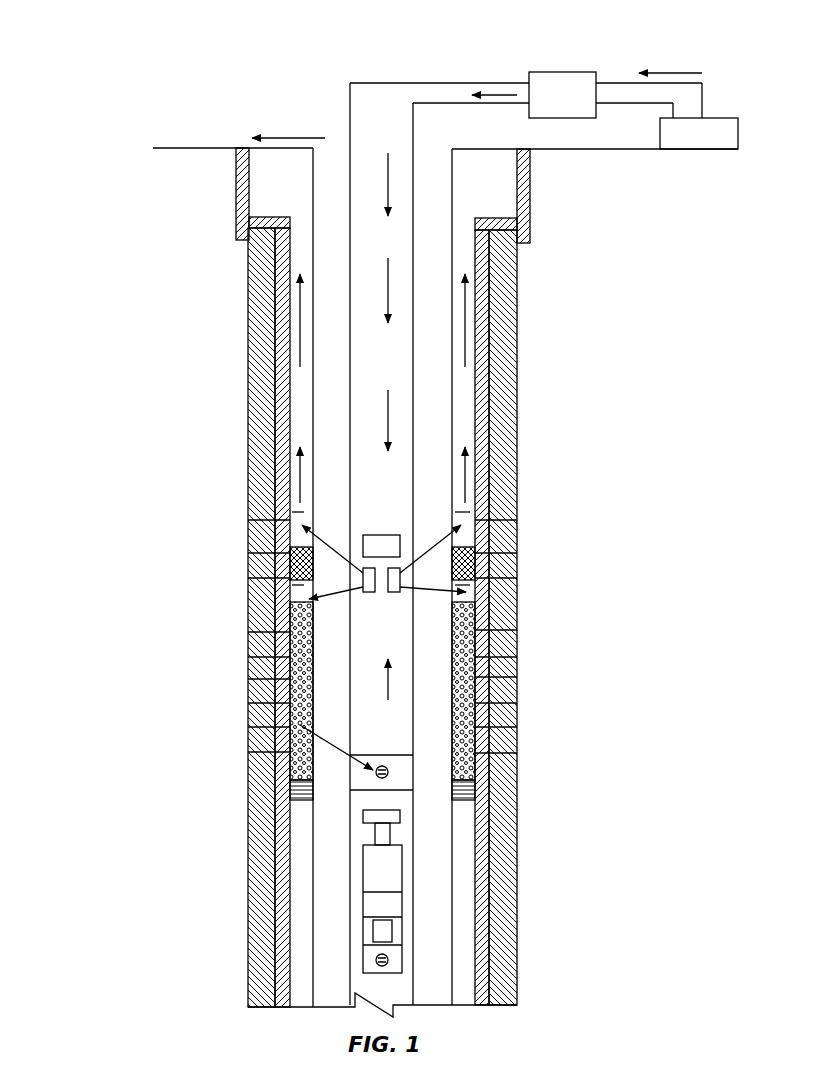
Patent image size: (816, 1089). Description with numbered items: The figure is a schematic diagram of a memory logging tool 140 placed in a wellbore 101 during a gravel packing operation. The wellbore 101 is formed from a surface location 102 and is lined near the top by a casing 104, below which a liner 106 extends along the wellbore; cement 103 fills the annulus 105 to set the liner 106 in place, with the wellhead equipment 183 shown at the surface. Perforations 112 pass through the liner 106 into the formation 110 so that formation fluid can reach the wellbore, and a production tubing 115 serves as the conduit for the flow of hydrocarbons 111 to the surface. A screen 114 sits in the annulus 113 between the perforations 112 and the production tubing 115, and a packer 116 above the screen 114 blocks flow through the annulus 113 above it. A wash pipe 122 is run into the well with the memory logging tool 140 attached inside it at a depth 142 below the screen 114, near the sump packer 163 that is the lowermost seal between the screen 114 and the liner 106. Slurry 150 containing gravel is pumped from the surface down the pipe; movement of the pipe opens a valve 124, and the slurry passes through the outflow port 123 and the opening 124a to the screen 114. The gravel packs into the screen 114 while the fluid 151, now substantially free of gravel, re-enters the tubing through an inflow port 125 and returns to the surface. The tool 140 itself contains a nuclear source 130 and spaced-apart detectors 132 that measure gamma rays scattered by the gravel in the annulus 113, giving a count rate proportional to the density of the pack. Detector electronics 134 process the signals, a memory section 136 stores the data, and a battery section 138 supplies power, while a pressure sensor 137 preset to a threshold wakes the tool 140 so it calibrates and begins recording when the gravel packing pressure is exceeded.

The formation 110 is at (124, 105).
The wellhead 183 is at (360, 82).
The production tubing 115 is at (427, 147).
The slurry 150 is at (500, 92).
The surface location 102 is at (563, 150).
The casing 104 is at (236, 187).
The wash pipe 122 is at (350, 250).
The liner 106 is at (267, 297).
The annulus 105 is at (492, 292).
The cement 103 is at (492, 363).
The wellbore 101 is at (517, 327).
The fluid 151 is at (297, 435).
The annulus 113 is at (252, 520).
The packer 116 is at (257, 553).
The valve 124 is at (390, 545).
The outflow port 123 is at (398, 580).
The opening 124a is at (493, 582).
The perforations 112 is at (250, 657).
The hydrocarbons 111 is at (203, 670).
The screen 114 is at (477, 664).
The sump packer 163 is at (505, 781).
The inflow port 125 is at (390, 770).
The memory logging tool 140 is at (423, 862).
The depth 142 is at (390, 817).
The pressure sensor 137 is at (383, 835).
The battery section 138 is at (378, 856).
The memory section 136 is at (372, 880).
The detector electronics 134 is at (392, 903).
The detectors 132 is at (383, 932).
The nuclear source 130 is at (390, 960).